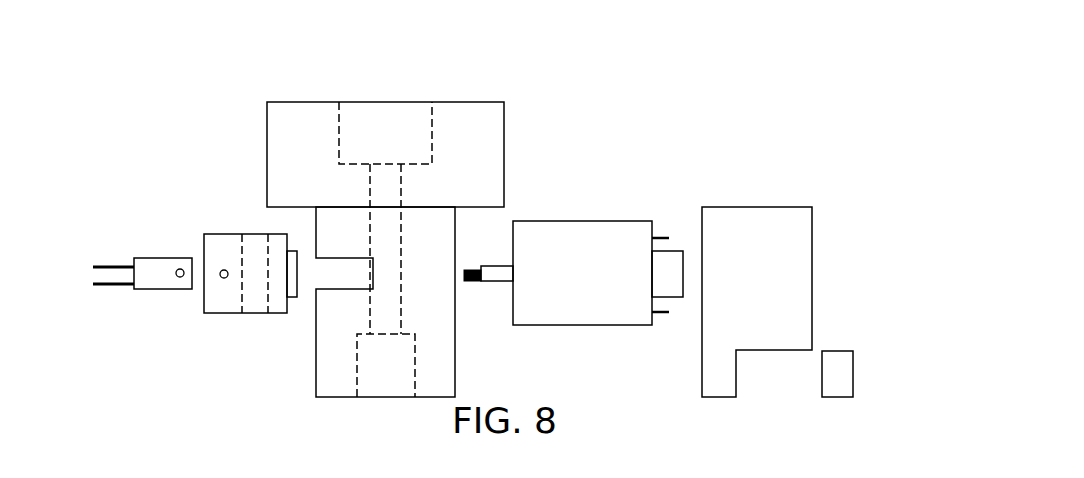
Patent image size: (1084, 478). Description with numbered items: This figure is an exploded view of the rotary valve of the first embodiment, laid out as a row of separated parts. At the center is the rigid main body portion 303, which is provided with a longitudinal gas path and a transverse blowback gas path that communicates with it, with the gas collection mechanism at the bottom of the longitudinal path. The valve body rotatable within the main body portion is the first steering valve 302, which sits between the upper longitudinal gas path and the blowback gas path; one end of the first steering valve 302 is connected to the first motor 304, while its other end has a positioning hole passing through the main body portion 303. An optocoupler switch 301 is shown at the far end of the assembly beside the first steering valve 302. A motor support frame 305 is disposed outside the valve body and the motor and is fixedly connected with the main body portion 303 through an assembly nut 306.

The optocoupler switch 301 is at (129, 241).
The first steering valve 302 is at (220, 242).
The main body portion 303 is at (464, 229).
The first motor 304 is at (589, 232).
The motor support frame 305 is at (787, 263).
The assembly nut 306 is at (877, 347).